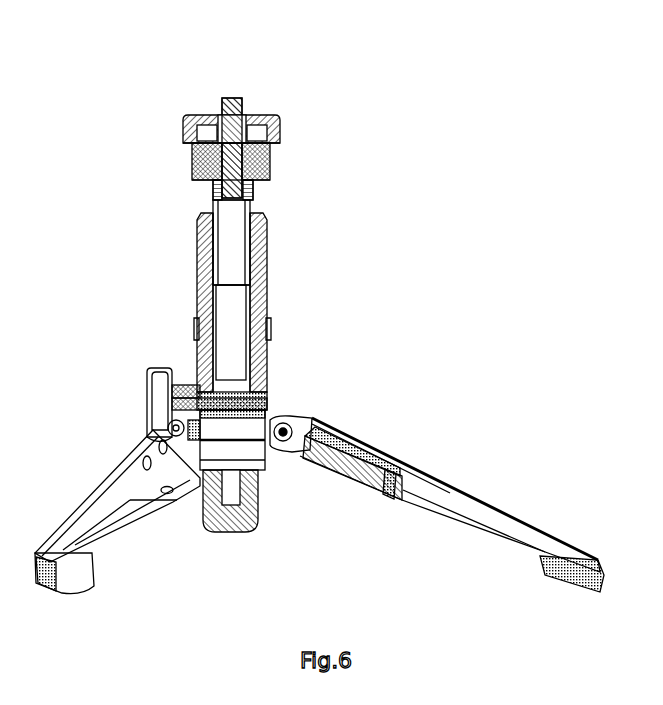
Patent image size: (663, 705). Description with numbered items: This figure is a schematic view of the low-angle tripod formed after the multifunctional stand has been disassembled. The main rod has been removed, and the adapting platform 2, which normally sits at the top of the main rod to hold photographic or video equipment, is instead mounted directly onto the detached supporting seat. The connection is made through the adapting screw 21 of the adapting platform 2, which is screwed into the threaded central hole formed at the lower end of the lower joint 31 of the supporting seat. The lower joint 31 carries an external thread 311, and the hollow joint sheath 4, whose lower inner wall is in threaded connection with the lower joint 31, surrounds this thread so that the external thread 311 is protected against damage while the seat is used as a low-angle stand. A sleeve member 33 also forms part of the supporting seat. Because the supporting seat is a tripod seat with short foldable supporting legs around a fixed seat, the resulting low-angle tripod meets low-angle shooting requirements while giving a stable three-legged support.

The adapting platform 2 is at (278, 122).
The adapting screw 21 is at (226, 100).
The joint sheath 4 is at (268, 173).
The lower joint 31 is at (194, 152).
The external thread 311 is at (192, 166).
The sleeve member 33 is at (252, 200).